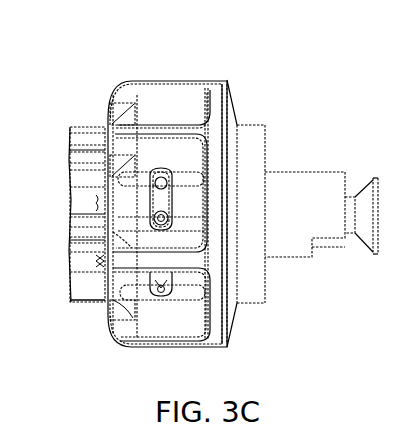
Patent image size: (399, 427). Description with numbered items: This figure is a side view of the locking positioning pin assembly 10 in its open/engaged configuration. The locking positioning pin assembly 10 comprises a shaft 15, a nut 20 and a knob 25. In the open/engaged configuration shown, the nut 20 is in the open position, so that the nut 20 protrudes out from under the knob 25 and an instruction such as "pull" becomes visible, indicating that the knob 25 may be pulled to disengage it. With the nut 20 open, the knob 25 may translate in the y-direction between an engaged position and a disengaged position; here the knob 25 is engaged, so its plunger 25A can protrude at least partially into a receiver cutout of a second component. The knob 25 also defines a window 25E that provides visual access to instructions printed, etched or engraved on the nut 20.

The locking positioning pin assembly 10 is at (108, 64).
The shaft 15 is at (318, 189).
The nut 20 is at (87, 184).
The knob 25 is at (182, 100).
The plunger 25A is at (252, 138).
The window 25E is at (172, 209).